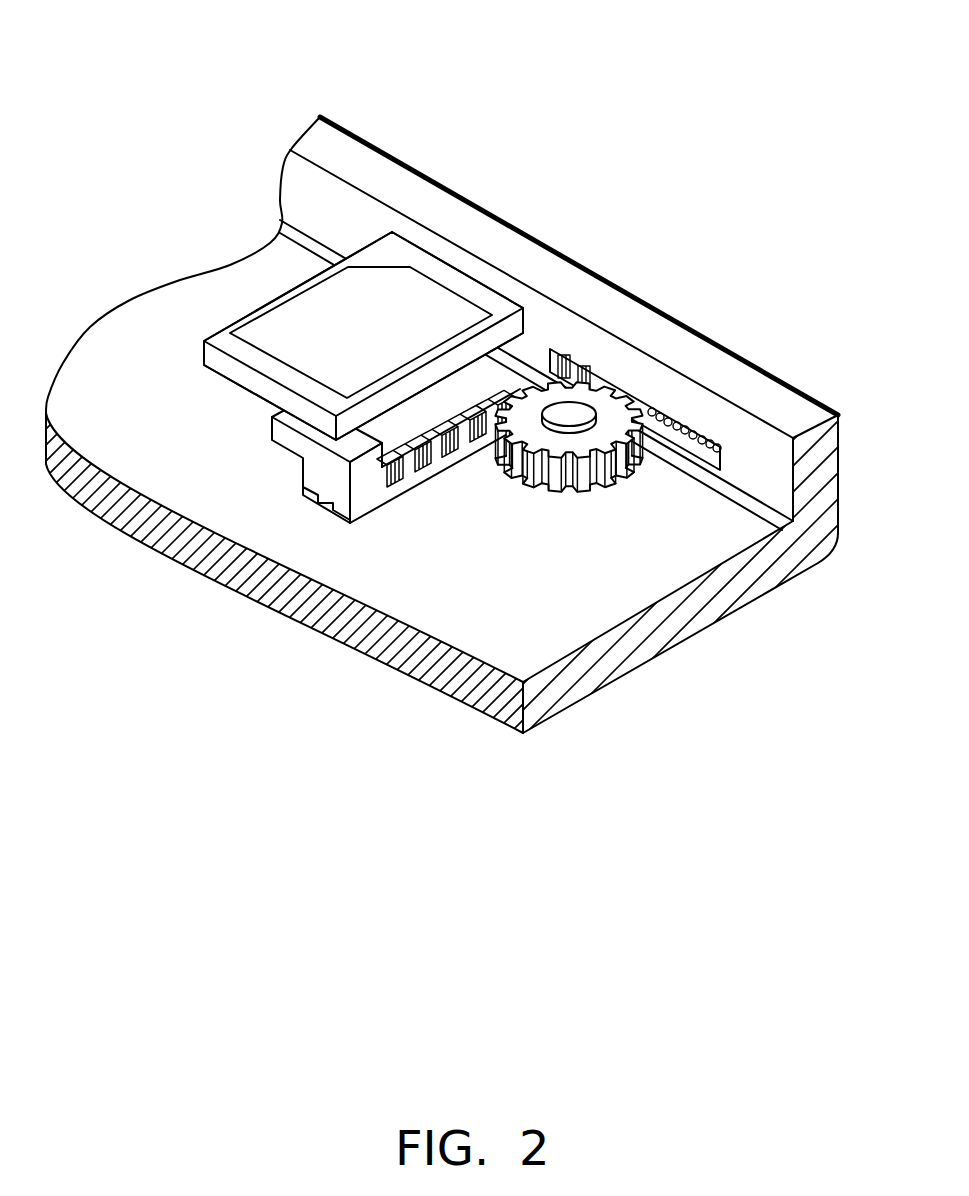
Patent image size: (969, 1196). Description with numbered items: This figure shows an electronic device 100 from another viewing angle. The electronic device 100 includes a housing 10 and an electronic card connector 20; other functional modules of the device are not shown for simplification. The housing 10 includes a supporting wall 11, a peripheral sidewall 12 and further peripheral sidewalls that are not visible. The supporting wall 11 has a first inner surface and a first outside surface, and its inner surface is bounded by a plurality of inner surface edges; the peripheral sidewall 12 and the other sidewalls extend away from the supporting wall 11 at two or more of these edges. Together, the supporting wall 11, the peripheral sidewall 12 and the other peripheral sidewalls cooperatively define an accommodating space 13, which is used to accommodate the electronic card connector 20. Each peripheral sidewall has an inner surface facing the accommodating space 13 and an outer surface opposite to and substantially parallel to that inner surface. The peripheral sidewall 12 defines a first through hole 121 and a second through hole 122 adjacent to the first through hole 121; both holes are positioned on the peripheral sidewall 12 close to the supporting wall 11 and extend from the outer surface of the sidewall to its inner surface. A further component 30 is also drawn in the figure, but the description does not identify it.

The electronic device 100 is at (484, 598).
The housing 10 is at (484, 598).
The supporting wall 11 is at (582, 592).
The peripheral sidewall 12 is at (559, 405).
The first through hole 121 is at (523, 318).
The second through hole 122 is at (703, 453).
The accommodating space 13 is at (440, 572).
The electronic card connector 20 is at (378, 255).
The circuit board 30 is at (298, 317).